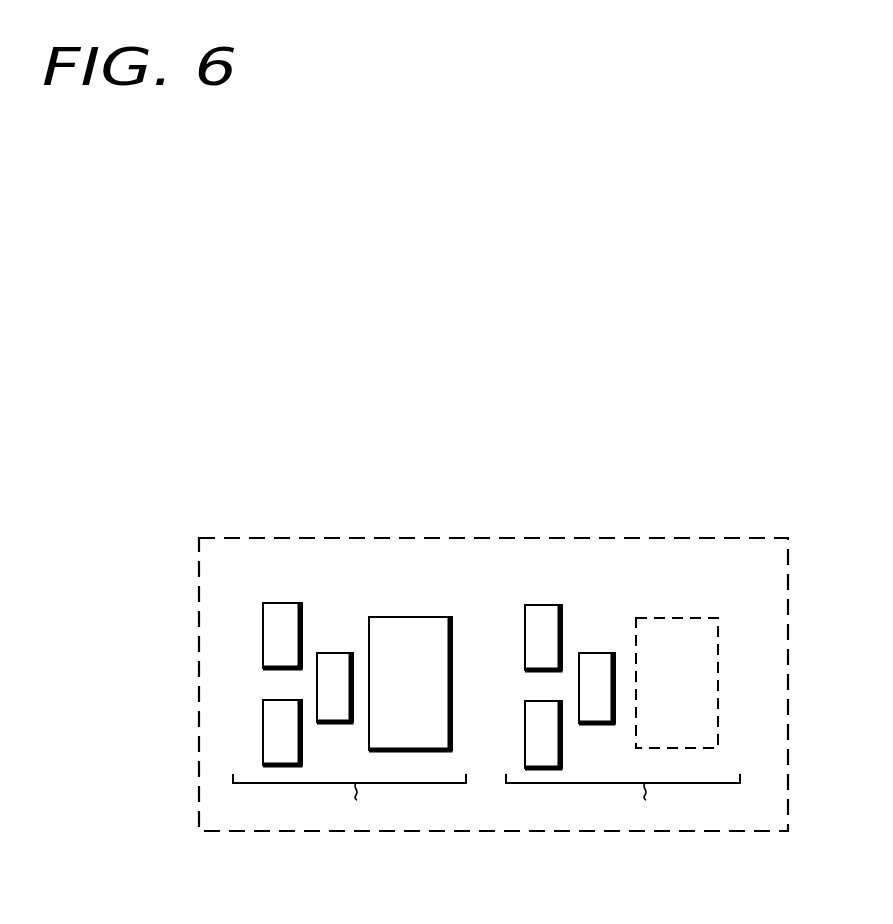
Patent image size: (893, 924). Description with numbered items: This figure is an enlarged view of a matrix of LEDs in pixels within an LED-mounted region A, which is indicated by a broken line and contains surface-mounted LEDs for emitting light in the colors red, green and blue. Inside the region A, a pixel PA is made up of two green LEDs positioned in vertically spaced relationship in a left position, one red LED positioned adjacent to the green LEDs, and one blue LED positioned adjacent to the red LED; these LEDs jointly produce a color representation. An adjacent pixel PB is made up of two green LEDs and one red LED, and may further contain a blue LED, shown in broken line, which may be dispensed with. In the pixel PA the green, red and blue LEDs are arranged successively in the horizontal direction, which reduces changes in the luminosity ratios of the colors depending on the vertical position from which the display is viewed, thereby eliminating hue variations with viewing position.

The LED-mounted region A is at (199, 692).
The pixel PA is at (349, 802).
The pixel PB is at (623, 725).